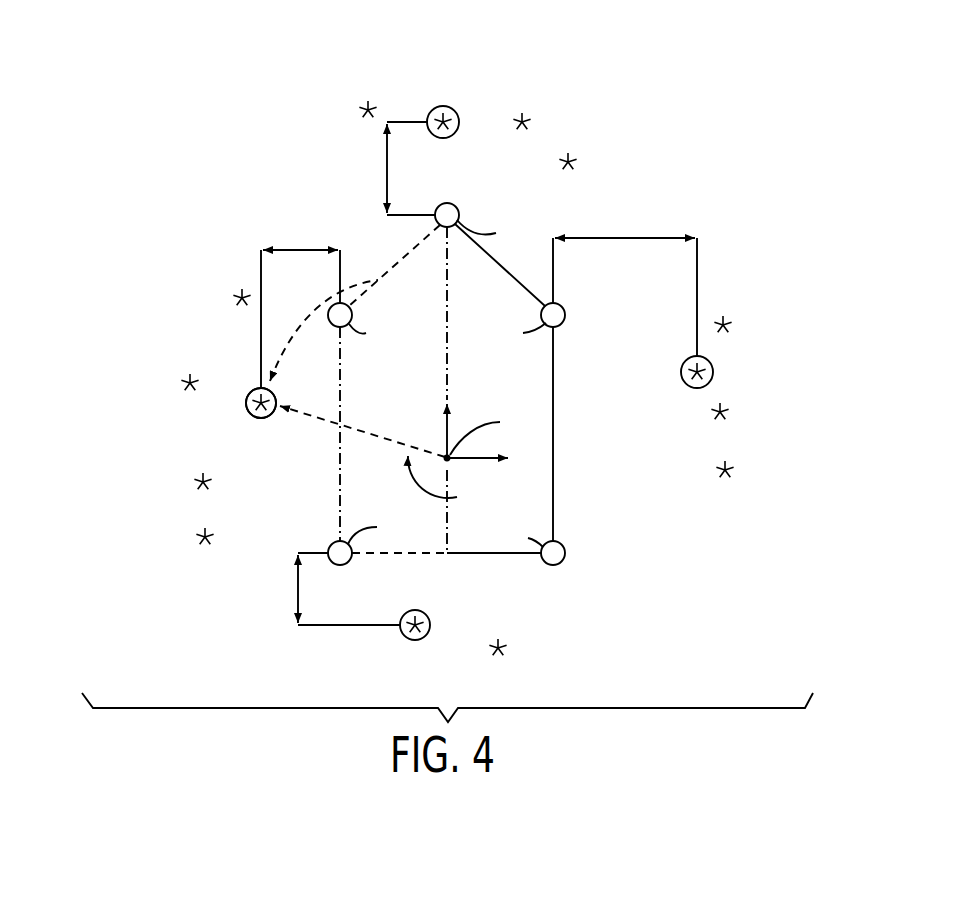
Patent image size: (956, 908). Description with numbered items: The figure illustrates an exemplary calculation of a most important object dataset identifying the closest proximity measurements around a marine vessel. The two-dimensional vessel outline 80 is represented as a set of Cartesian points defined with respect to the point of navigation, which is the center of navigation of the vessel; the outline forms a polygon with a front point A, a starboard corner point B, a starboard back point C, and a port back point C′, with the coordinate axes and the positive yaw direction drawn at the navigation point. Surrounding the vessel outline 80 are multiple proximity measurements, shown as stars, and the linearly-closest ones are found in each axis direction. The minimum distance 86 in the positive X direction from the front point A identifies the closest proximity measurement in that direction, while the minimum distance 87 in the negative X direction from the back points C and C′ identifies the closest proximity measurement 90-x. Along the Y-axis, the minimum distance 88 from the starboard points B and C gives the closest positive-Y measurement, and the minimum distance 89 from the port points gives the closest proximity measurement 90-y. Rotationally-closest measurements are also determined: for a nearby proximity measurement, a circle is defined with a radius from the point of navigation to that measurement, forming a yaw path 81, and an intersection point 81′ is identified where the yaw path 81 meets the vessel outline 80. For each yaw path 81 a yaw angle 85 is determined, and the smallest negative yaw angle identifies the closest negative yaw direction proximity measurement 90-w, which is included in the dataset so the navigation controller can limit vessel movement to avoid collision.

The two-dimensional vessel outline 80 is at (556, 405).
The yaw path 81 is at (310, 315).
The intersection point 81′ is at (377, 283).
The yaw angle 85 is at (438, 444).
The minimum distance in the positive X direction 86 is at (386, 168).
The minimum distance in the negative X direction 87 is at (298, 590).
The minimum distance in the positive Y direction 88 is at (627, 238).
The minimum distance in the negative Y direction 89 is at (300, 248).
The closest proximity measurement in the negative X direction 90-x is at (425, 612).
The closest proximity measurement in the negative Y direction 90-y is at (248, 414).
The closest negative yaw direction proximity measurement 90-w is at (259, 388).